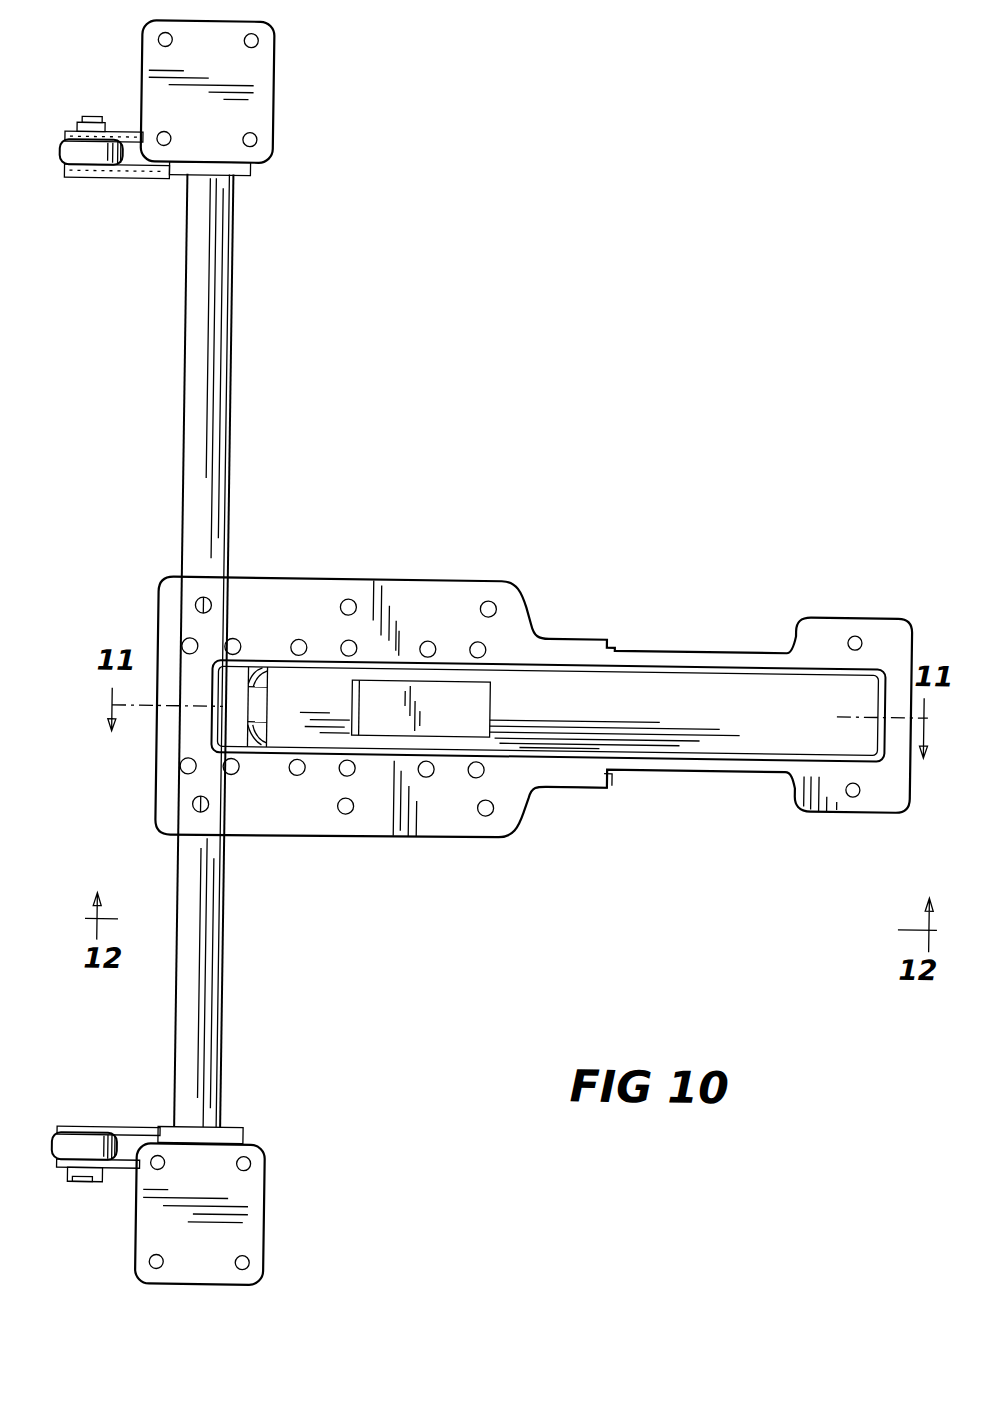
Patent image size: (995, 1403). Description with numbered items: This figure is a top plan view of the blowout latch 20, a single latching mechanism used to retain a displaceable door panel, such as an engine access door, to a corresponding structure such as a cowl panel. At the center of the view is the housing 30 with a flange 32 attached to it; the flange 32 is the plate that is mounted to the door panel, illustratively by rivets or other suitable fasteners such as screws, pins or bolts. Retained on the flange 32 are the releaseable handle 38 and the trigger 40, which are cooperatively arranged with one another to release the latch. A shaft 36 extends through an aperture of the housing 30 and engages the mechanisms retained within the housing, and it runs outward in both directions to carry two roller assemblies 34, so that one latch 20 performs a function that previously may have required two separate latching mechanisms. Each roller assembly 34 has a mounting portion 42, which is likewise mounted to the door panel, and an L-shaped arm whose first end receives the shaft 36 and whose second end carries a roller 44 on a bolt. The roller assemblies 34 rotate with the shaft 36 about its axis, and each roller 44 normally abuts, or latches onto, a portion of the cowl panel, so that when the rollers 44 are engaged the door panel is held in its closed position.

The blowout latch 20 is at (512, 560).
The housing 30 is at (589, 788).
The flange 32 is at (464, 820).
The roller assembly 34 is at (109, 649).
The shaft 36 is at (210, 944).
The releaseable handle 38 is at (665, 692).
The trigger 40 is at (450, 688).
The mounting portion 42 is at (253, 74).
The roller 44 is at (110, 150).